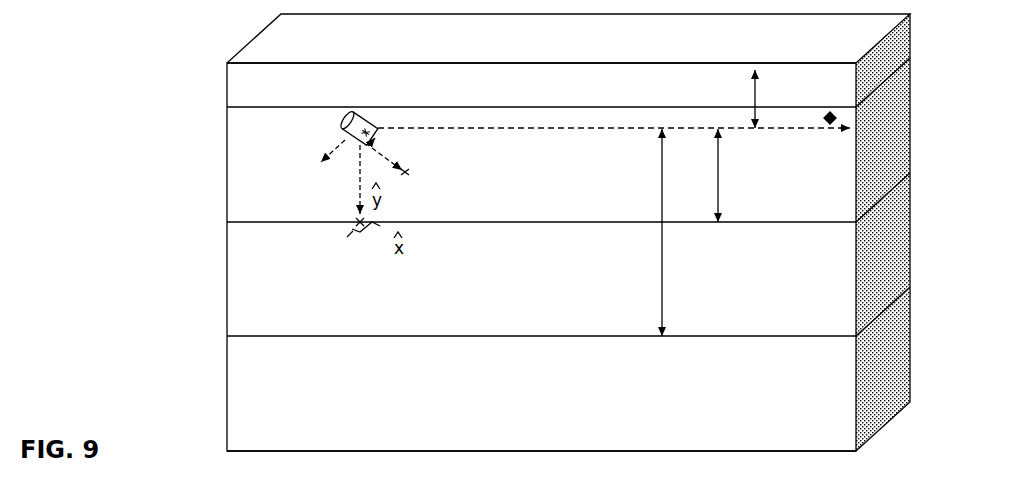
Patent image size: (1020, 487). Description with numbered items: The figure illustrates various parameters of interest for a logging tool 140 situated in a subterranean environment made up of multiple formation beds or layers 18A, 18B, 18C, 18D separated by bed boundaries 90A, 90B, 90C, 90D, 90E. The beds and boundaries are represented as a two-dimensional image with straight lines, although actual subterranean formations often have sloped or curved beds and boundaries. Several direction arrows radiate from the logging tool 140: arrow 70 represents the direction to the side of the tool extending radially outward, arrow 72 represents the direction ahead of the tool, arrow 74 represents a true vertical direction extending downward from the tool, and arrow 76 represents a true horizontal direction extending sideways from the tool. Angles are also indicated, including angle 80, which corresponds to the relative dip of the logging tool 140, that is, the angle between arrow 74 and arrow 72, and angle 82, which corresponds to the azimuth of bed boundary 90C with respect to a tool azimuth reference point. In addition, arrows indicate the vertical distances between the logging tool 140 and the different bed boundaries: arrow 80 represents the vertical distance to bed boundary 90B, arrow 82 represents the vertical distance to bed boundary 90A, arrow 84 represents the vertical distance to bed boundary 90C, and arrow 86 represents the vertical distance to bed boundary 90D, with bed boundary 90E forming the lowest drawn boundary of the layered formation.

The bed boundary 90A is at (222, 63).
The bed boundary 90B is at (222, 107).
The bed boundary 90C is at (222, 222).
The bed boundary 90D is at (222, 336).
The bed boundary 90E is at (222, 451).
The formation bed 18A is at (550, 93).
The formation bed 18B is at (550, 206).
The formation bed 18C is at (550, 315).
The formation bed 18D is at (550, 410).
The logging tool 140 is at (344, 120).
The arrow 70 is at (338, 145).
The arrow 72 is at (410, 166).
The arrow 74 is at (358, 166).
The arrow 76 is at (482, 130).
The angle / arrow 80 is at (826, 122).
The angle / arrow 82 is at (758, 98).
The arrow 84 is at (724, 155).
The arrow 86 is at (660, 190).